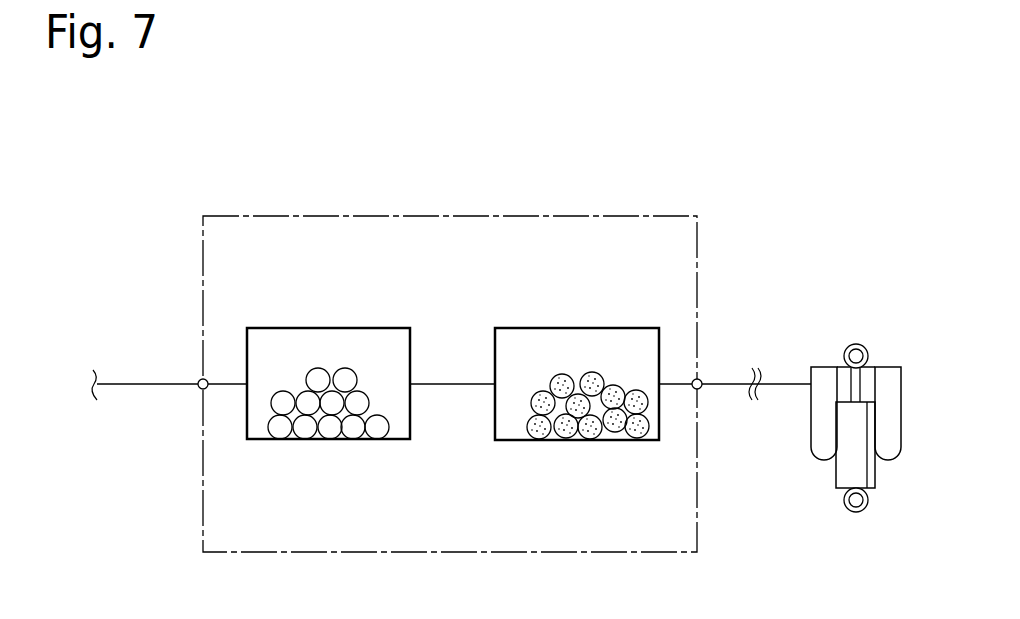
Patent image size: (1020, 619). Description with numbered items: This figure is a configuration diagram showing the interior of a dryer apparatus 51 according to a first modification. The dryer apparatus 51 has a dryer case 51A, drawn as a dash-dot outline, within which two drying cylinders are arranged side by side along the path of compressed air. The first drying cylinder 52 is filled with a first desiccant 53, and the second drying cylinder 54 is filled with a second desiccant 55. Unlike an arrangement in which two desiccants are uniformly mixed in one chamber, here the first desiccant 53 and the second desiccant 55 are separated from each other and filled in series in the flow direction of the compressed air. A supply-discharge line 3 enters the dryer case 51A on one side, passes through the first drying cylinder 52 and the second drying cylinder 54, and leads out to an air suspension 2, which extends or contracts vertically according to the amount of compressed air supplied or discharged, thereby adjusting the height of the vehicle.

The air suspension 2 is at (830, 387).
The supply-discharge line 3 is at (151, 380).
The dryer apparatus 51 is at (440, 202).
The dryer case 51A is at (398, 216).
The first drying cylinder 52 is at (288, 327).
The first desiccant 53 is at (318, 380).
The second drying cylinder 54 is at (566, 327).
The second desiccant 55 is at (613, 397).